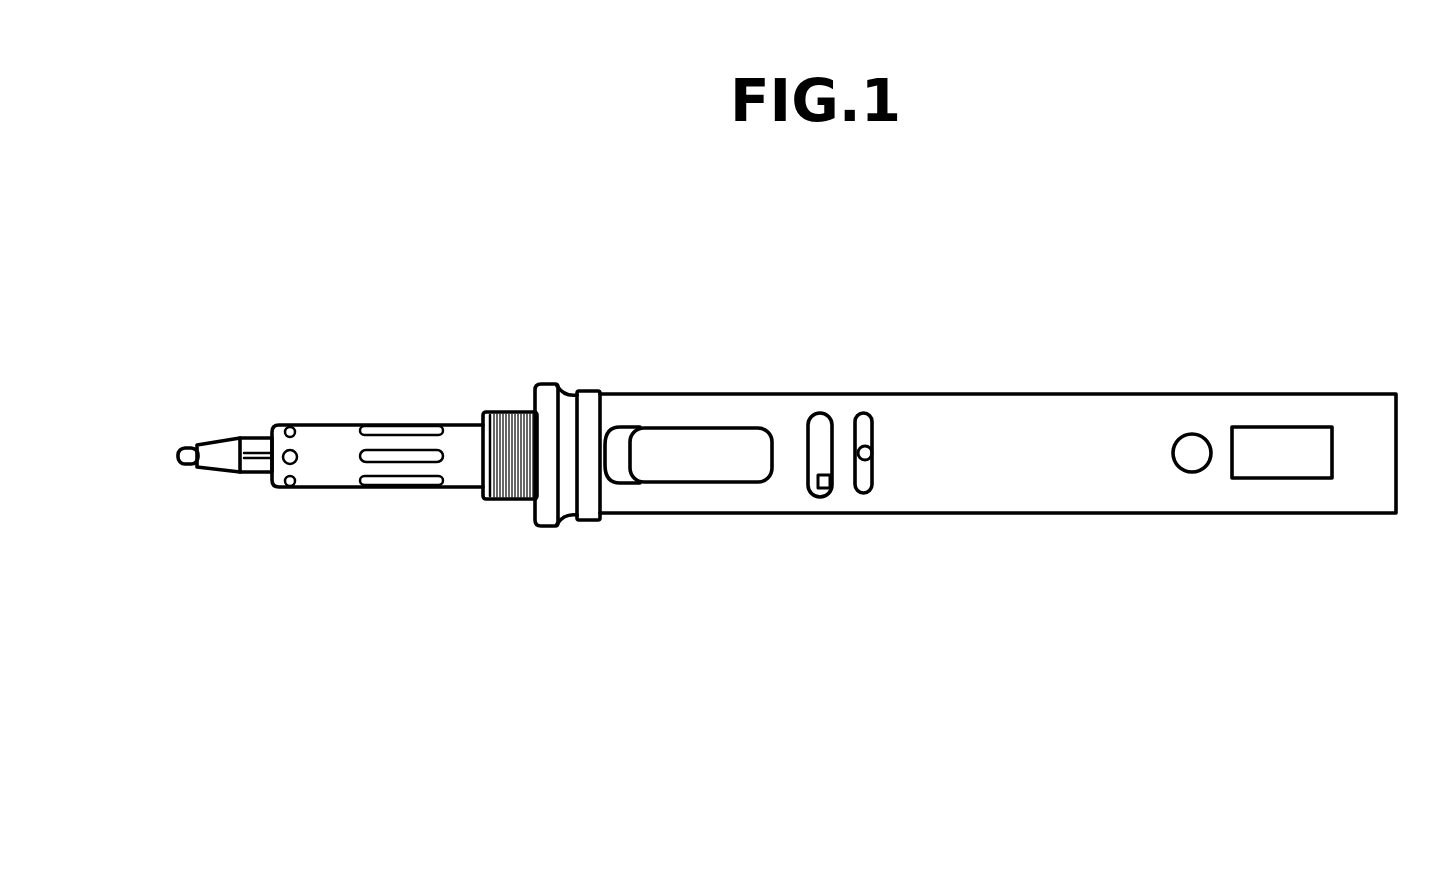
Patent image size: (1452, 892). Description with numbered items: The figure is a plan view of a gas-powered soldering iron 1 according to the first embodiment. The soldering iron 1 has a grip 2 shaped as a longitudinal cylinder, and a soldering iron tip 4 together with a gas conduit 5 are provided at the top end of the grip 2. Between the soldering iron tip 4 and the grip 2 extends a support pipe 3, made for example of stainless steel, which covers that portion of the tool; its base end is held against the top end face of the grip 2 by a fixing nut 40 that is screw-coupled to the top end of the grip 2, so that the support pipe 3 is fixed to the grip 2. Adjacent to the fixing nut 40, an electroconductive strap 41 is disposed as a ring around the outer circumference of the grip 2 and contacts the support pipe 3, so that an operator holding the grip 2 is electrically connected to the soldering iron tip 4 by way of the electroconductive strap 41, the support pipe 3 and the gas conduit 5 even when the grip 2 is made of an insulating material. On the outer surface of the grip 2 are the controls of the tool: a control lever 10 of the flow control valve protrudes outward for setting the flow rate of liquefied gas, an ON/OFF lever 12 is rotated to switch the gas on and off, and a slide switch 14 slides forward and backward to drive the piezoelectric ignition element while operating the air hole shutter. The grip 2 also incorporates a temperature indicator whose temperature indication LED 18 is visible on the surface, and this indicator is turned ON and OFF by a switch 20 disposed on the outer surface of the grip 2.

The soldering iron 1 is at (1012, 308).
The grip 2 is at (1025, 483).
The support pipe 3 is at (342, 437).
The soldering iron tip 4 is at (195, 448).
The gas conduit 5 is at (228, 472).
The control lever 10 is at (870, 453).
The ON/OFF lever 12 is at (832, 488).
The slide switch 14 is at (715, 448).
The temperature indication LED 18 is at (1292, 465).
The switch 20 is at (1192, 443).
The fixing nut 40 is at (512, 412).
The electroconductive strap 41 is at (590, 510).